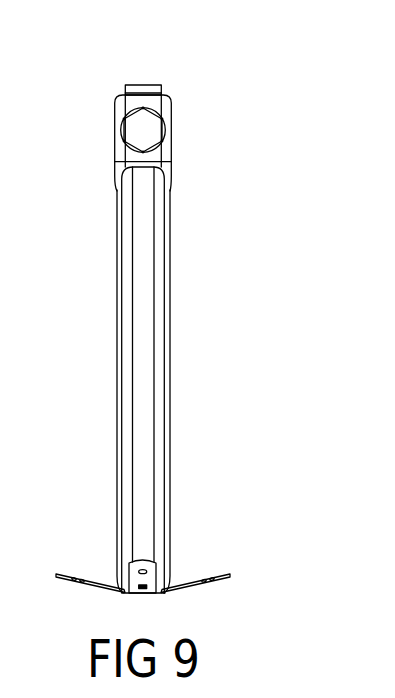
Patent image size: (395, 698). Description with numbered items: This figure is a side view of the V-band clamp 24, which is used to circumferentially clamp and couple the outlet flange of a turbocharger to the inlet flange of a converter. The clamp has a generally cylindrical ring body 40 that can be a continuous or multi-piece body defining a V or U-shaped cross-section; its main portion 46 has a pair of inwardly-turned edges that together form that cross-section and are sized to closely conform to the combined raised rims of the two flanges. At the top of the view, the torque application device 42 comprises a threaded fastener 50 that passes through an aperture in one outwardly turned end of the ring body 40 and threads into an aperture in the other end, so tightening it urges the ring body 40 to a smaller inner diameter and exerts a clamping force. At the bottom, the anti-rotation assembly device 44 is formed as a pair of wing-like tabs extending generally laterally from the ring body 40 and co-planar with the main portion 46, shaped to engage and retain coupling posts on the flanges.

The V-band clamp 24 is at (274, 238).
The ring body 40 is at (165, 335).
The torque application device 42 is at (190, 67).
The anti-rotation assembly device 44 is at (246, 551).
The main portion 46 is at (142, 393).
The threaded fastener 50 is at (143, 130).